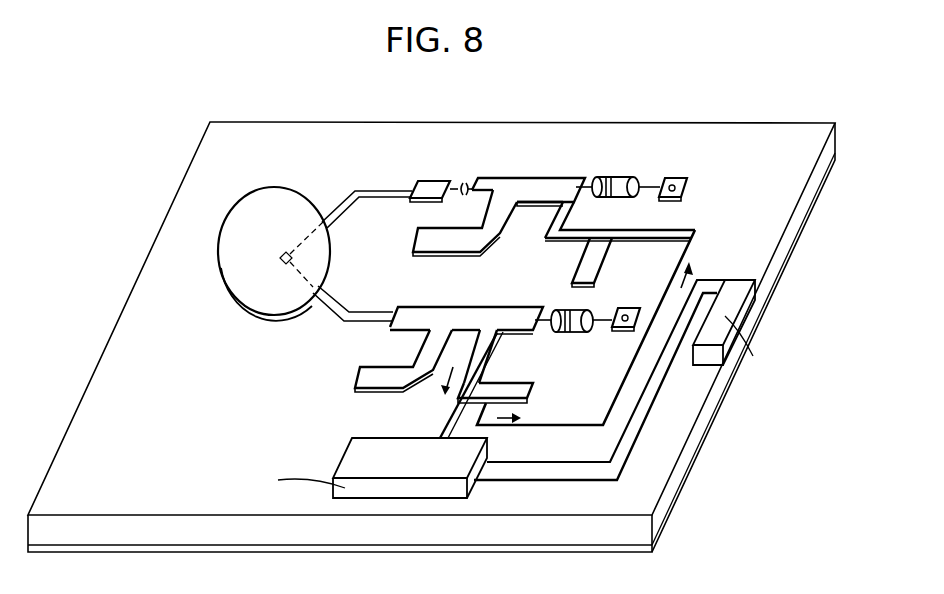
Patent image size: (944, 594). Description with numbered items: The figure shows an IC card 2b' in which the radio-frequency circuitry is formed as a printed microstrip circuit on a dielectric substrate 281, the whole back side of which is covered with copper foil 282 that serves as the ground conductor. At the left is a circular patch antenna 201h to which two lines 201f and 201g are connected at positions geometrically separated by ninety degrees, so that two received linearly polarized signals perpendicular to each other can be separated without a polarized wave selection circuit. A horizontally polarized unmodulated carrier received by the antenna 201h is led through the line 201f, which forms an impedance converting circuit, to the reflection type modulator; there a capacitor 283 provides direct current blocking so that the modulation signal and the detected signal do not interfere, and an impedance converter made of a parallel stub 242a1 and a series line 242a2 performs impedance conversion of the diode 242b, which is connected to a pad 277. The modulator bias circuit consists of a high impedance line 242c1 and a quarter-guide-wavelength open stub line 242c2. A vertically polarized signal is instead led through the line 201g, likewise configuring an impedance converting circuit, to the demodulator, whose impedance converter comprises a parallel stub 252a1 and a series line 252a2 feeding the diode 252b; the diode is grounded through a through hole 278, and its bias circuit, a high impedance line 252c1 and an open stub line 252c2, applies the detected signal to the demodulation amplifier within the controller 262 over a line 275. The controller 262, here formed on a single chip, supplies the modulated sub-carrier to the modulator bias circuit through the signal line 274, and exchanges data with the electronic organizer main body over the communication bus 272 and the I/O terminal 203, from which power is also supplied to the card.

The IC card 2b' is at (431, 274).
The circular patch antenna 201h is at (260, 203).
The line 201f is at (355, 190).
The line 201g is at (325, 303).
The capacitor 283 is at (458, 180).
The series line 242a2 is at (546, 185).
The parallel stub 242a1 is at (460, 240).
The diode 242b is at (621, 182).
The pad 277 is at (685, 184).
The high impedance line 242c1 is at (562, 218).
The open stub line 242c2 is at (586, 262).
The through hole 278 is at (630, 307).
The series line 252a2 is at (490, 300).
The parallel stub 252a1 is at (357, 378).
The diode 252b is at (572, 332).
The high impedance line 252c1 is at (482, 370).
The open stub line 252c2 is at (528, 394).
The connection pattern 275 is at (452, 416).
The signal line 274 is at (551, 426).
The communication bus 272 is at (633, 432).
The controller 262 is at (357, 461).
The I/O terminal 203 is at (740, 273).
The dielectric substrate 281 is at (645, 486).
The copper foil 282 is at (654, 550).